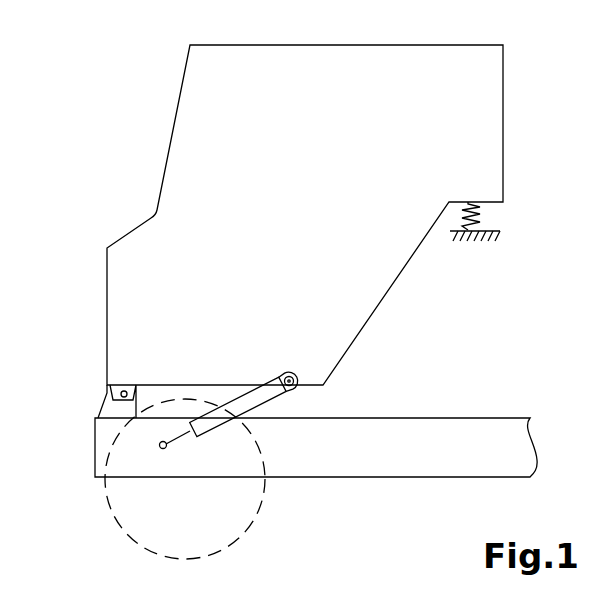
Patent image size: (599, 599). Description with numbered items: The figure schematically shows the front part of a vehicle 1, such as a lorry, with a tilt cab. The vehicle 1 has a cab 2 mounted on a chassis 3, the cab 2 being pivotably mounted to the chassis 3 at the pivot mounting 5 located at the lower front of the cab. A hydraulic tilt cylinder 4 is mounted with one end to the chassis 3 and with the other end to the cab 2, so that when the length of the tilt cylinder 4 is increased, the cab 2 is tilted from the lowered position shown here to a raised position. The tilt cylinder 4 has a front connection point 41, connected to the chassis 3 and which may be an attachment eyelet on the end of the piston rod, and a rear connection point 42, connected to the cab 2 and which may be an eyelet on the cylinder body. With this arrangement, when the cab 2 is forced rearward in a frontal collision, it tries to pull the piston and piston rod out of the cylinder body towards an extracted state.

The vehicle 1 is at (79, 113).
The cab 2 is at (370, 68).
The chassis 3 is at (460, 428).
The hydraulic tilt cylinder 4 is at (237, 389).
The front connection point 41 is at (165, 452).
The rear connection point 42 is at (298, 377).
The pivot mounting 5 is at (99, 390).